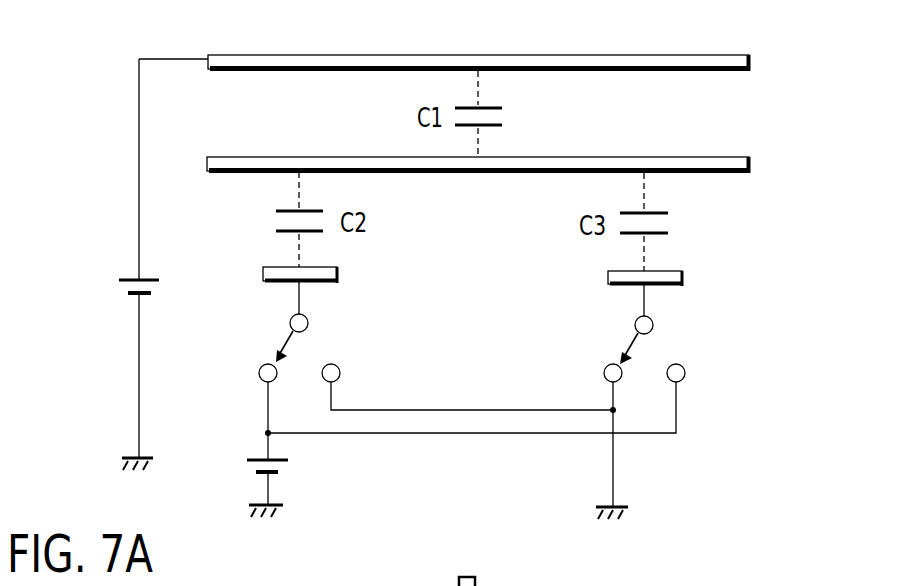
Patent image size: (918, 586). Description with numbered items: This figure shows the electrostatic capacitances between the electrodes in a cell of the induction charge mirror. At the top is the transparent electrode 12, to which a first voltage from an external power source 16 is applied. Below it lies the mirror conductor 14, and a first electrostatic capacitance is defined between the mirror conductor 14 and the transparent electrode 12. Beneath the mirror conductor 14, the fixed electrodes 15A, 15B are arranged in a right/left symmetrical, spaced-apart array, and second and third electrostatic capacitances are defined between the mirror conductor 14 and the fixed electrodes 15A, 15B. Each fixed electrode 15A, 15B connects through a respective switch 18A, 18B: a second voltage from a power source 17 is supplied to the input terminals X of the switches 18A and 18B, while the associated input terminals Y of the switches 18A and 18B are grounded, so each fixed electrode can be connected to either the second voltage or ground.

The transparent electrode 12 is at (606, 55).
The mirror conductor 14 is at (593, 158).
The fixed electrode 15A is at (338, 270).
The fixed electrode 15B is at (686, 273).
The external power source 16 is at (120, 290).
The power source 17 is at (243, 468).
The switch 18A is at (281, 338).
The switch 18B is at (665, 350).